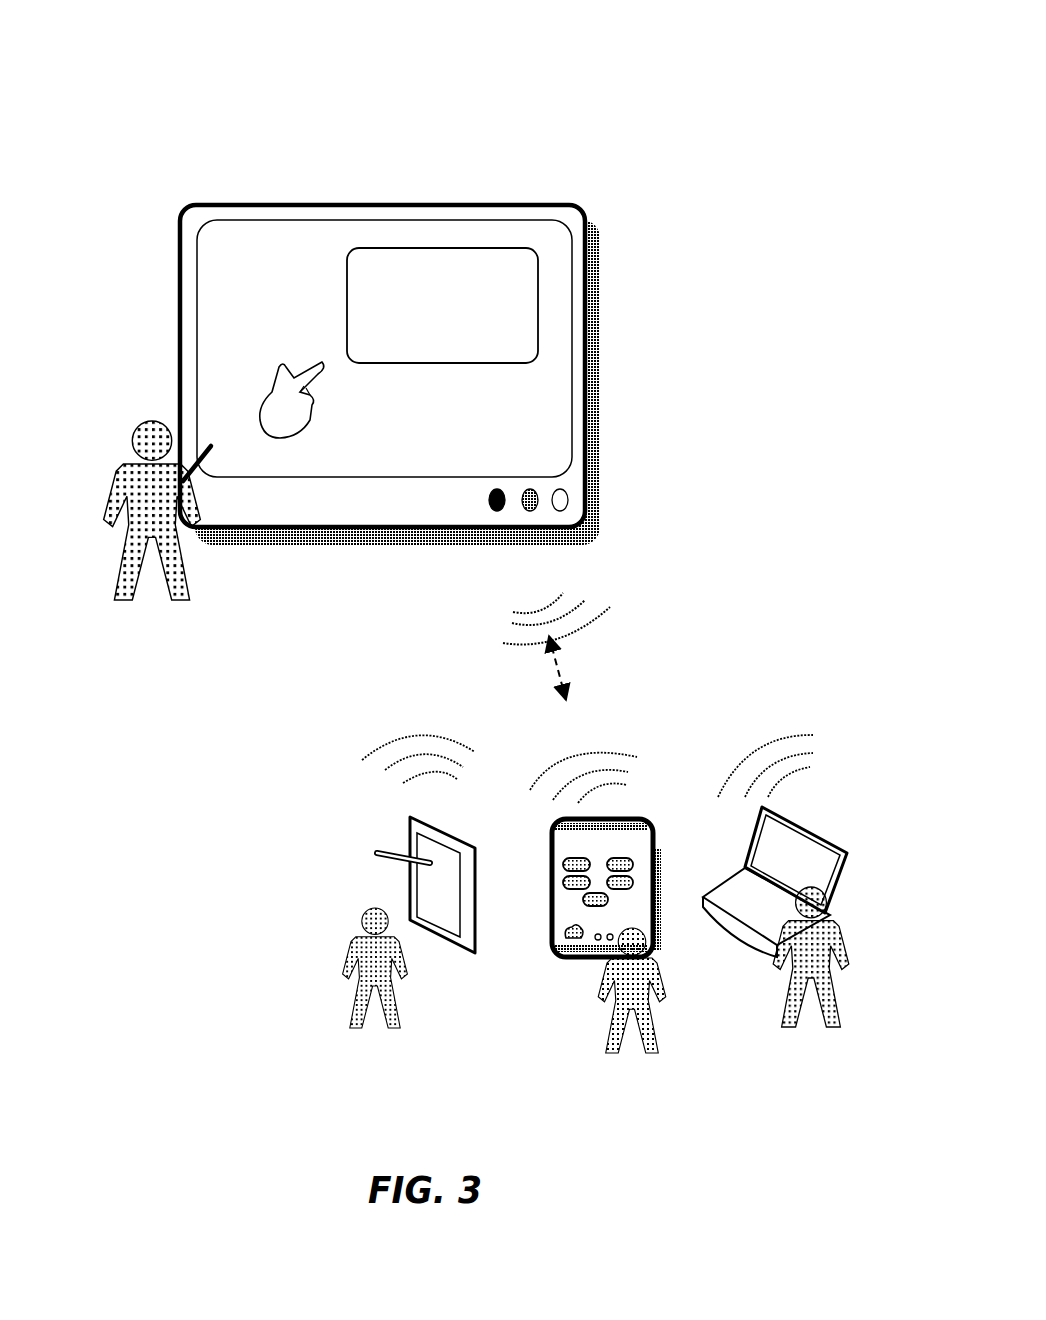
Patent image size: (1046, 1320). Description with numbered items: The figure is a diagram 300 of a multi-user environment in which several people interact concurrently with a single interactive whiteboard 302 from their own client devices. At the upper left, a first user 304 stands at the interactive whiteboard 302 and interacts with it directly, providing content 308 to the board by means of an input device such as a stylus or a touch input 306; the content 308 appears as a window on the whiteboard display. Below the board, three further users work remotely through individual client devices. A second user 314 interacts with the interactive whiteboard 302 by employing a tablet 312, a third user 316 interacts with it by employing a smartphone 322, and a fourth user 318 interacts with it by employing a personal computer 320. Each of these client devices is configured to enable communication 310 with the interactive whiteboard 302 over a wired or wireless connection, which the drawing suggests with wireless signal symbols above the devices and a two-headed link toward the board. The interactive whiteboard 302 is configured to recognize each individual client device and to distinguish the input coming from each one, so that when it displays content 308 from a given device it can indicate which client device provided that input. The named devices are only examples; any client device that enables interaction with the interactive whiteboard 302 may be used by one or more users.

The diagram 300 is at (703, 40).
The interactive whiteboard 302 is at (478, 155).
The first user 304 is at (143, 378).
The touch input 306 is at (310, 358).
The content 308 is at (345, 262).
The communication 310 is at (527, 672).
The tablet 312 is at (375, 797).
The second user 314 is at (368, 908).
The third user 316 is at (602, 1073).
The fourth user 318 is at (786, 1028).
The personal computer 320 is at (822, 818).
The smartphone 322 is at (647, 806).